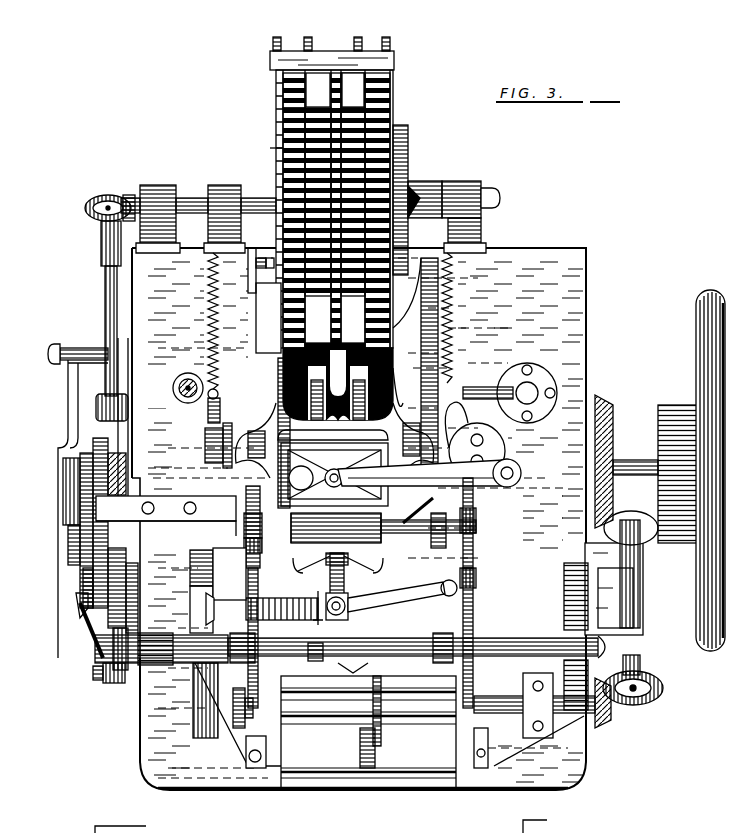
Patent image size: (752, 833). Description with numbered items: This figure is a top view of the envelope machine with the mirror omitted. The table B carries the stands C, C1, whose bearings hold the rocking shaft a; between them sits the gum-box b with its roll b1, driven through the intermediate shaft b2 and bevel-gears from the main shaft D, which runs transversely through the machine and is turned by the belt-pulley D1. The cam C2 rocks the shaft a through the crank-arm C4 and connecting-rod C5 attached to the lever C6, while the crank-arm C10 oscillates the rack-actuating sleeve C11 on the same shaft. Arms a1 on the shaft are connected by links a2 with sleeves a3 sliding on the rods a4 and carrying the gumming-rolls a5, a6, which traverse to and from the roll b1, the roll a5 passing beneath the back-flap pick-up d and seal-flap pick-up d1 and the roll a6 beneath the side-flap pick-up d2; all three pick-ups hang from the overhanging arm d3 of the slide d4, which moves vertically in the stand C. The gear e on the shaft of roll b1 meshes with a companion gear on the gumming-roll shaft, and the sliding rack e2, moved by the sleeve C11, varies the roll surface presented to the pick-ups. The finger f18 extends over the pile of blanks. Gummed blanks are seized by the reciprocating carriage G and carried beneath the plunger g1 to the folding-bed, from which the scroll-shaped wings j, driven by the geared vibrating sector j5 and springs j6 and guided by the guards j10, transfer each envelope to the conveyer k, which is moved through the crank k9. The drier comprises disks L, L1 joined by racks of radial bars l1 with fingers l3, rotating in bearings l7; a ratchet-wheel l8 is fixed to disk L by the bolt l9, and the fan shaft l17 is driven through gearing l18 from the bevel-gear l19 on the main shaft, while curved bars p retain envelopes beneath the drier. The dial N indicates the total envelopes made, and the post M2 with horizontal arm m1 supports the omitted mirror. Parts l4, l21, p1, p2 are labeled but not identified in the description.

The table B is at (359, 519).
The drier disk L is at (385, 92).
The drier disk L1 is at (270, 95).
The radial bars l1 is at (353, 90).
The finger l3 is at (318, 90).
The top bolts l4 is at (340, 34).
The rack bar l21 is at (264, 143).
The bolt l9 is at (400, 140).
The ratchet-wheel l8 is at (400, 165).
The bearings l7 is at (225, 178).
The fan shaft l17 is at (185, 190).
The intermediate gearing l18 is at (112, 188).
The bevel-gear l19 is at (95, 420).
The conveyer k is at (325, 410).
The crank k9 is at (70, 510).
The scroll-shaped wings j is at (218, 360).
The geared vibrating sector j5 is at (452, 415).
The springs j6 is at (440, 300).
The guards j10 is at (268, 378).
The curved bars p is at (238, 280).
The pin p1 is at (250, 250).
The pin p2 is at (262, 262).
The dial N is at (165, 380).
The stand C is at (80, 445).
The stand C1 is at (92, 555).
The cam C2 is at (44, 348).
The crank-arm C4 is at (95, 672).
The connecting-rod C5 is at (72, 630).
The lever C6 is at (55, 510).
The crank-arm C10 is at (130, 600).
The rack-actuating sleeve C11 is at (180, 650).
The gear e is at (228, 685).
The sliding rack e2 is at (220, 525).
The plunger g1 is at (322, 458).
The reciprocating carriage G is at (418, 508).
The rocking shaft a is at (530, 628).
The arms a1 is at (455, 605).
The links a2 is at (252, 552).
The sleeves a3 is at (254, 505).
The rods or ways a4 is at (262, 472).
The gumming-roll a5 is at (386, 534).
The gumming-roll a6 is at (428, 540).
The post M2 is at (527, 393).
The horizontal arm m1 is at (480, 370).
The back-flap gummer or pick-up d is at (310, 652).
The seal-flap gummer or pick-up d1 is at (356, 585).
The side-flap gummer or pick-up d2 is at (455, 582).
The overhanging arm d3 is at (290, 612).
The slide d4 is at (208, 582).
The finger f18 is at (348, 614).
The gum-box b is at (270, 748).
The gum-box roll b1 is at (410, 686).
The intermediate shaft b2 is at (630, 598).
The main shaft D is at (638, 440).
The belt-pulley D1 is at (668, 395).